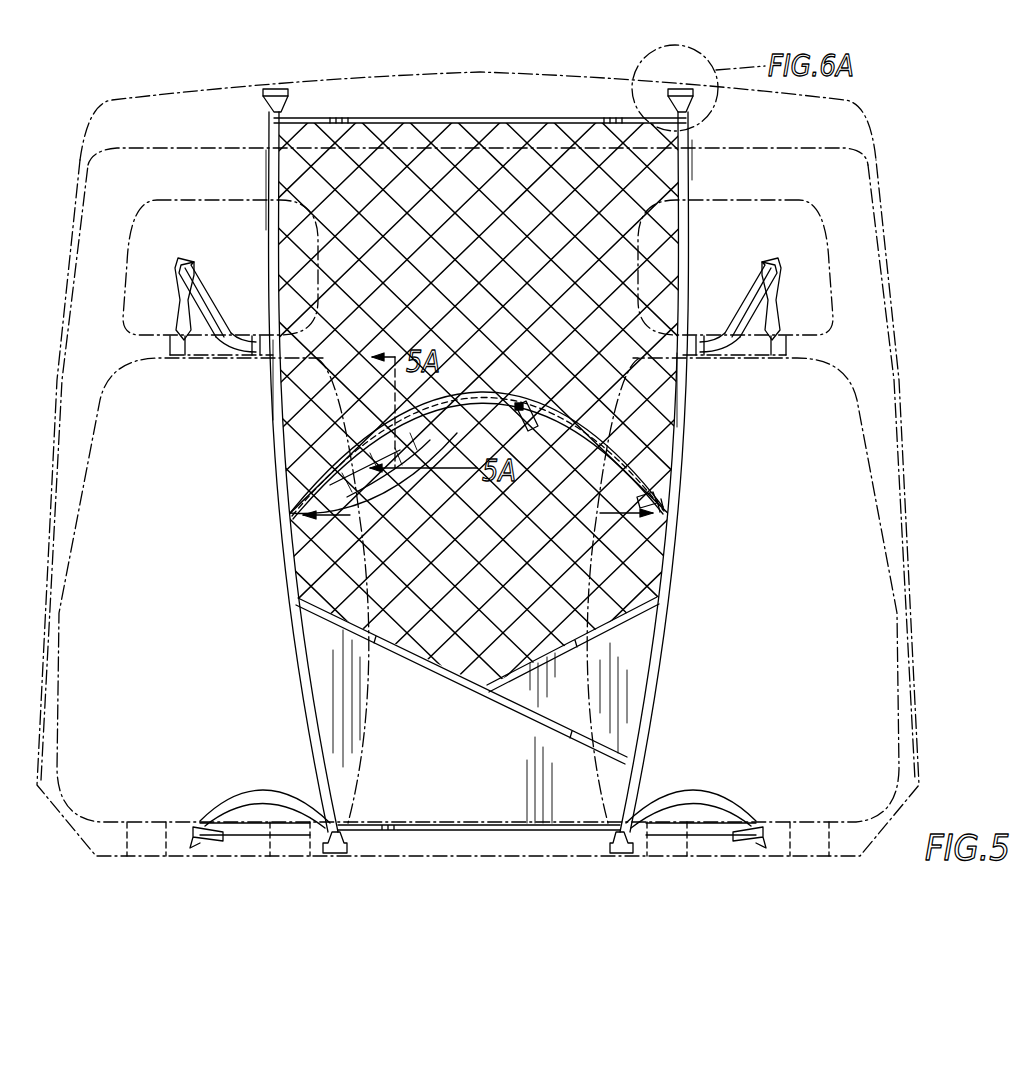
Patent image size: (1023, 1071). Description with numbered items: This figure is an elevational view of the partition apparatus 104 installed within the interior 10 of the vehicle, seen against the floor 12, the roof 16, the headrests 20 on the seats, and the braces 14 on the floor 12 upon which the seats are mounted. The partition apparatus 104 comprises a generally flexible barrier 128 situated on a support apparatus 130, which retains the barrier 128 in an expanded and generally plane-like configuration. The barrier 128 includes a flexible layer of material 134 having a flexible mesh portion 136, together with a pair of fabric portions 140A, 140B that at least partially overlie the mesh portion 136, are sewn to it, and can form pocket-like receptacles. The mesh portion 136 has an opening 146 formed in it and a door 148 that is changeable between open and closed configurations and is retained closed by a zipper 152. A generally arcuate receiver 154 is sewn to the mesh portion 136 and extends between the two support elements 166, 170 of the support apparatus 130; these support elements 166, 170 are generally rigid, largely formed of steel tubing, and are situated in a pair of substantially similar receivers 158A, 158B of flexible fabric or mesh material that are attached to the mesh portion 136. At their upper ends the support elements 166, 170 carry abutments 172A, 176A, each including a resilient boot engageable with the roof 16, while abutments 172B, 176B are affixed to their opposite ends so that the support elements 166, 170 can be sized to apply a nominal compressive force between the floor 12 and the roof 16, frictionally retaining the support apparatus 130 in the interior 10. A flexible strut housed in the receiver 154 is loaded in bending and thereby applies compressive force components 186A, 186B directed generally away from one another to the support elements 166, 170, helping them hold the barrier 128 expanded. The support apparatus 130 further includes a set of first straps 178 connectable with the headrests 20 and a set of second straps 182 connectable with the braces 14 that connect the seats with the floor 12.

The interior 10 is at (480, 848).
The floor 12 is at (403, 846).
The braces 14 is at (263, 847).
The roof 16 is at (498, 84).
The headrests 20 is at (140, 335).
The partition apparatus 104 is at (409, 105).
The barrier 128 is at (311, 105).
The support apparatus 130 is at (252, 107).
The layer of material 134 is at (668, 185).
The mesh portion 136 is at (645, 227).
The fabric portion 140A is at (310, 637).
The fabric portion 140B is at (660, 637).
The opening 146 is at (347, 447).
The door 148 is at (403, 495).
The zipper 152 is at (463, 403).
The receiver 154 is at (525, 405).
The receiver 158A is at (270, 223).
The receiver 158B is at (690, 398).
The support element 166 is at (257, 123).
The support element 170 is at (664, 112).
The abutment 172A is at (262, 96).
The abutment 172B is at (349, 846).
The abutment 176A is at (694, 100).
The abutment 176B is at (608, 846).
The first straps 178 is at (180, 288).
The second straps 182 is at (247, 795).
The compressive force component 186A is at (292, 518).
The compressive force component 186B is at (640, 522).